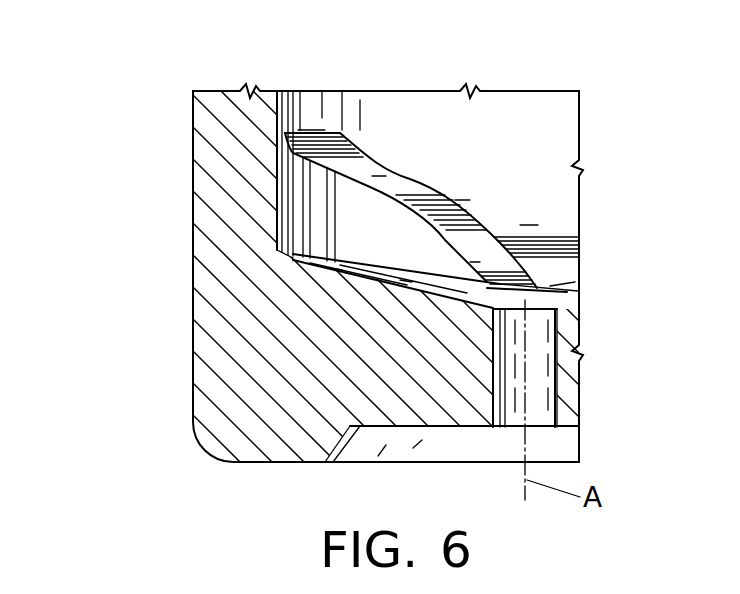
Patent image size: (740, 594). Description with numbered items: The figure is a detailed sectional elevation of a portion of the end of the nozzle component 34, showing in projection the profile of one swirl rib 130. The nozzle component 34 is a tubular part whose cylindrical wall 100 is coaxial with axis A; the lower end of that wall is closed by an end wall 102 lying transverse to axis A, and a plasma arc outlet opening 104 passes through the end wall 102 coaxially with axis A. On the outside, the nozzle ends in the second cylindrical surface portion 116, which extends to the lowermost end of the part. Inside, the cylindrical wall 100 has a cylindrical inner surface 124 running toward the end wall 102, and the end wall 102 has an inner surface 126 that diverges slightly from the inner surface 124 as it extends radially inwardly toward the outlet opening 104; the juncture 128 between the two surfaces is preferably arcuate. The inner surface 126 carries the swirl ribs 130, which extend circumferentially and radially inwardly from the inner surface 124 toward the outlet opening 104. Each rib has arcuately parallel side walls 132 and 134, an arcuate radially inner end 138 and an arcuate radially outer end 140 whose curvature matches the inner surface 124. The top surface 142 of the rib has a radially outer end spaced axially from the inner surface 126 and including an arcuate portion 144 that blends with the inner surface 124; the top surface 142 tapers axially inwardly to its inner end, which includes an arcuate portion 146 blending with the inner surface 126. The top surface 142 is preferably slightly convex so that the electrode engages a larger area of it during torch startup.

The cylindrical wall 100 is at (227, 113).
The end wall 102 is at (330, 375).
The second cylindrical surface portion 116 is at (193, 243).
The nozzle component 34 is at (160, 290).
The cylindrical inner surface 124 is at (277, 112).
The side wall 134 is at (347, 205).
The radially outer end 140 is at (307, 128).
The arcuate portion 144 is at (298, 152).
The top surface 142 is at (385, 175).
The swirl rib 130 is at (413, 172).
The side wall 132 is at (437, 192).
The inner surface 126 is at (418, 268).
The arcuate portion 146 is at (540, 288).
The radially inner end 138 is at (515, 290).
The juncture 128 is at (290, 257).
The plasma arc outlet opening 104 is at (537, 368).